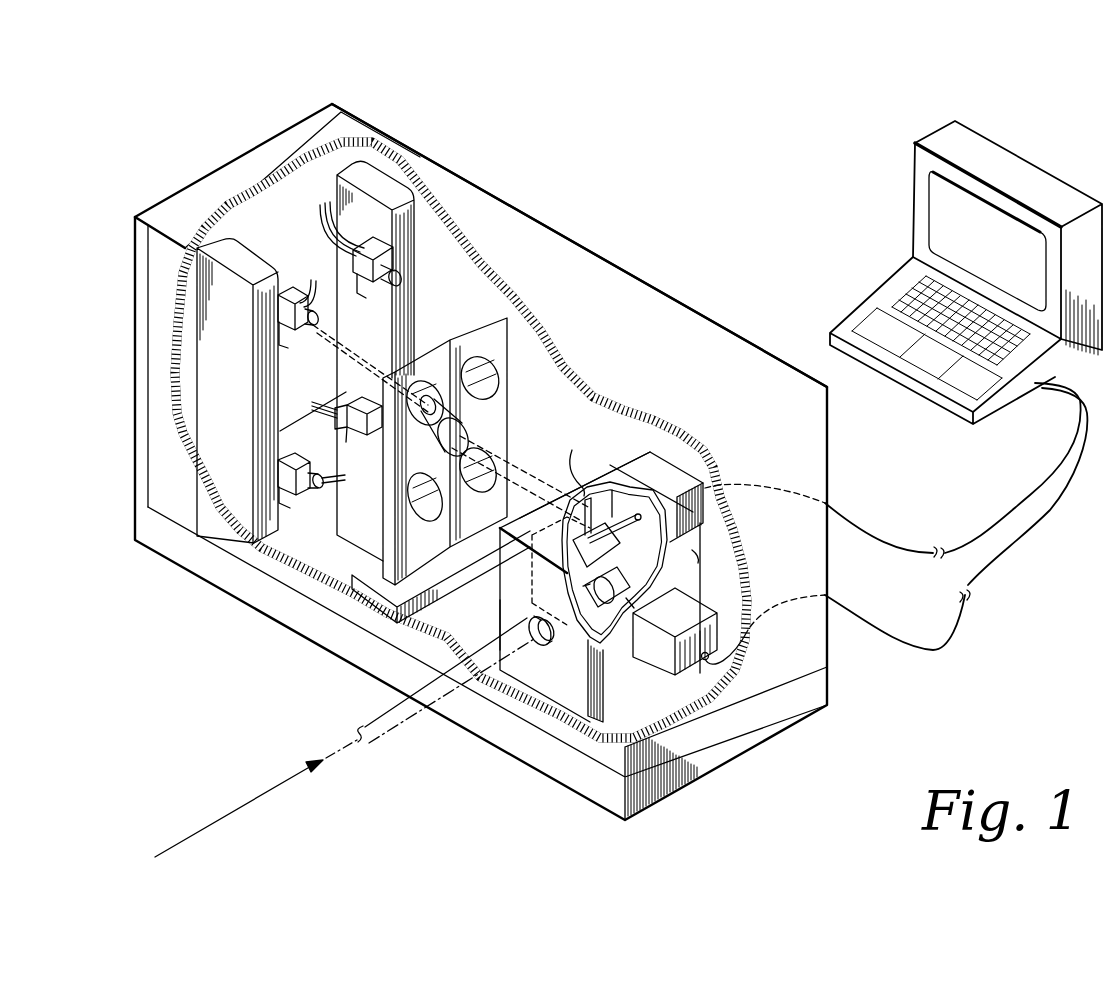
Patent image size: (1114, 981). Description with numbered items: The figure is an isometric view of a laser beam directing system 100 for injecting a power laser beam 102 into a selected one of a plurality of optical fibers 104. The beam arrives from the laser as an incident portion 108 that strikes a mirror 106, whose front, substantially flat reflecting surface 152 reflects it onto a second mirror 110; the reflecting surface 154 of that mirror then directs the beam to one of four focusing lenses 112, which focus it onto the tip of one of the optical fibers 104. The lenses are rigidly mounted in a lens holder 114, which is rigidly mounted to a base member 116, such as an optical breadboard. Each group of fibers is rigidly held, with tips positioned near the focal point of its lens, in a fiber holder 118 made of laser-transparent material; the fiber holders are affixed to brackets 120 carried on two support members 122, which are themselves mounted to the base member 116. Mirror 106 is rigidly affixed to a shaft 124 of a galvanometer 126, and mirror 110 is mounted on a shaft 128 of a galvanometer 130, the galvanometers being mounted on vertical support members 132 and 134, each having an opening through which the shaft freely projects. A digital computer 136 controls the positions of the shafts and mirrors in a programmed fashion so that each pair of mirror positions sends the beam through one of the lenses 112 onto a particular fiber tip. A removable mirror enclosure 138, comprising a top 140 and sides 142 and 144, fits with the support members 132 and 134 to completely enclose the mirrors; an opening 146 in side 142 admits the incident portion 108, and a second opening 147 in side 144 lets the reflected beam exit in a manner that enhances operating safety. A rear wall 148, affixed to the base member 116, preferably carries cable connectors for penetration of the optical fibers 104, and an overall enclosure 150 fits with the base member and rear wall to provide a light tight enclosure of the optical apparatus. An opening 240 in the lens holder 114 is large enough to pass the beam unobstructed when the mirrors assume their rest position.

The laser beam directing system 100 is at (189, 700).
The laser beam 102 is at (397, 729).
The optical fibers 104 is at (318, 203).
The mirror 106 is at (580, 588).
The incident portion of the laser beam 108 is at (536, 645).
The second mirror 110 is at (620, 550).
The focusing lenses 112 is at (480, 366).
The lens holder 114 is at (383, 527).
The base member 116 is at (218, 575).
The fiber holder 118 is at (376, 244).
The brackets 120 is at (358, 283).
The support members 122 is at (237, 253).
The shaft 124 is at (652, 585).
The galvanometer 126 is at (683, 675).
The shaft 128 is at (620, 523).
The galvanometer 130 is at (663, 468).
The vertical support member 132 is at (696, 553).
The vertical support member 134 is at (617, 462).
The digital computer 136 is at (897, 272).
The mirror enclosure 138 is at (490, 612).
The top 140 is at (739, 539).
The side 142 is at (500, 628).
The side 144 is at (605, 510).
The opening 146 is at (553, 636).
The second opening 147 is at (571, 462).
The rear wall 148 is at (137, 372).
The overall enclosure 150 is at (588, 250).
The reflecting surface 152 is at (594, 652).
The reflecting surface 154 is at (620, 571).
The opening 240 is at (428, 448).